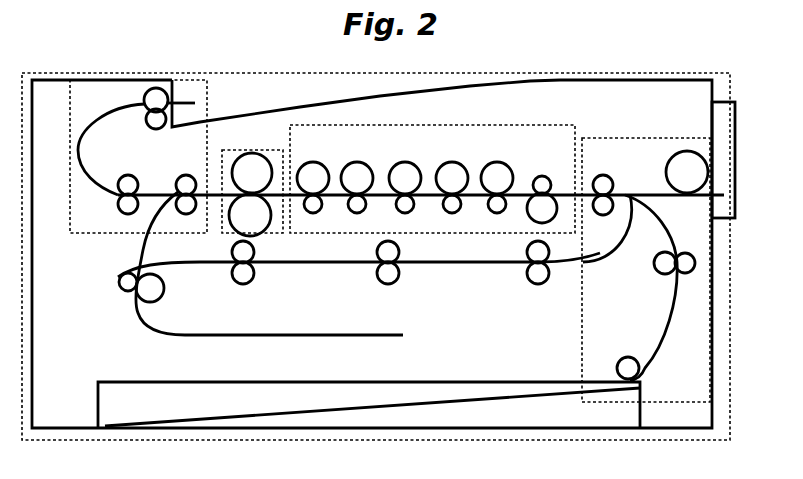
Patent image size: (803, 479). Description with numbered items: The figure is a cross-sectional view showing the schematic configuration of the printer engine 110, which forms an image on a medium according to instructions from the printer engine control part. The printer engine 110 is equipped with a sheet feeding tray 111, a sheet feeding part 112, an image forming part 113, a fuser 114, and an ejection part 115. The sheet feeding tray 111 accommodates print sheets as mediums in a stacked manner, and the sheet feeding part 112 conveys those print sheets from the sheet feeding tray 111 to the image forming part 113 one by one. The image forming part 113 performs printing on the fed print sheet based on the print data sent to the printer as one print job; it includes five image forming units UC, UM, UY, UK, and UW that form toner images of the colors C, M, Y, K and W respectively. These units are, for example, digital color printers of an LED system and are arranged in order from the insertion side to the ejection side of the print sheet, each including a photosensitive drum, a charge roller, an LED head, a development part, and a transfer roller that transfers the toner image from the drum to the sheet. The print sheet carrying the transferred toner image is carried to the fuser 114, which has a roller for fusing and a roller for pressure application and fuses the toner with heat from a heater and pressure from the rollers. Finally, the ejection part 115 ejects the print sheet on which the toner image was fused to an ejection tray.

The printer engine 110 is at (268, 70).
The sheet feeding tray 111 is at (130, 381).
The sheet feeding part 112 is at (581, 344).
The image forming part 113 is at (460, 166).
The fuser 114 is at (226, 151).
The ejection part 115 is at (97, 242).
The image forming unit UC is at (318, 167).
The image forming unit UM is at (364, 167).
The image forming unit UY is at (412, 167).
The image forming unit UK is at (458, 167).
The image forming unit UW is at (504, 167).